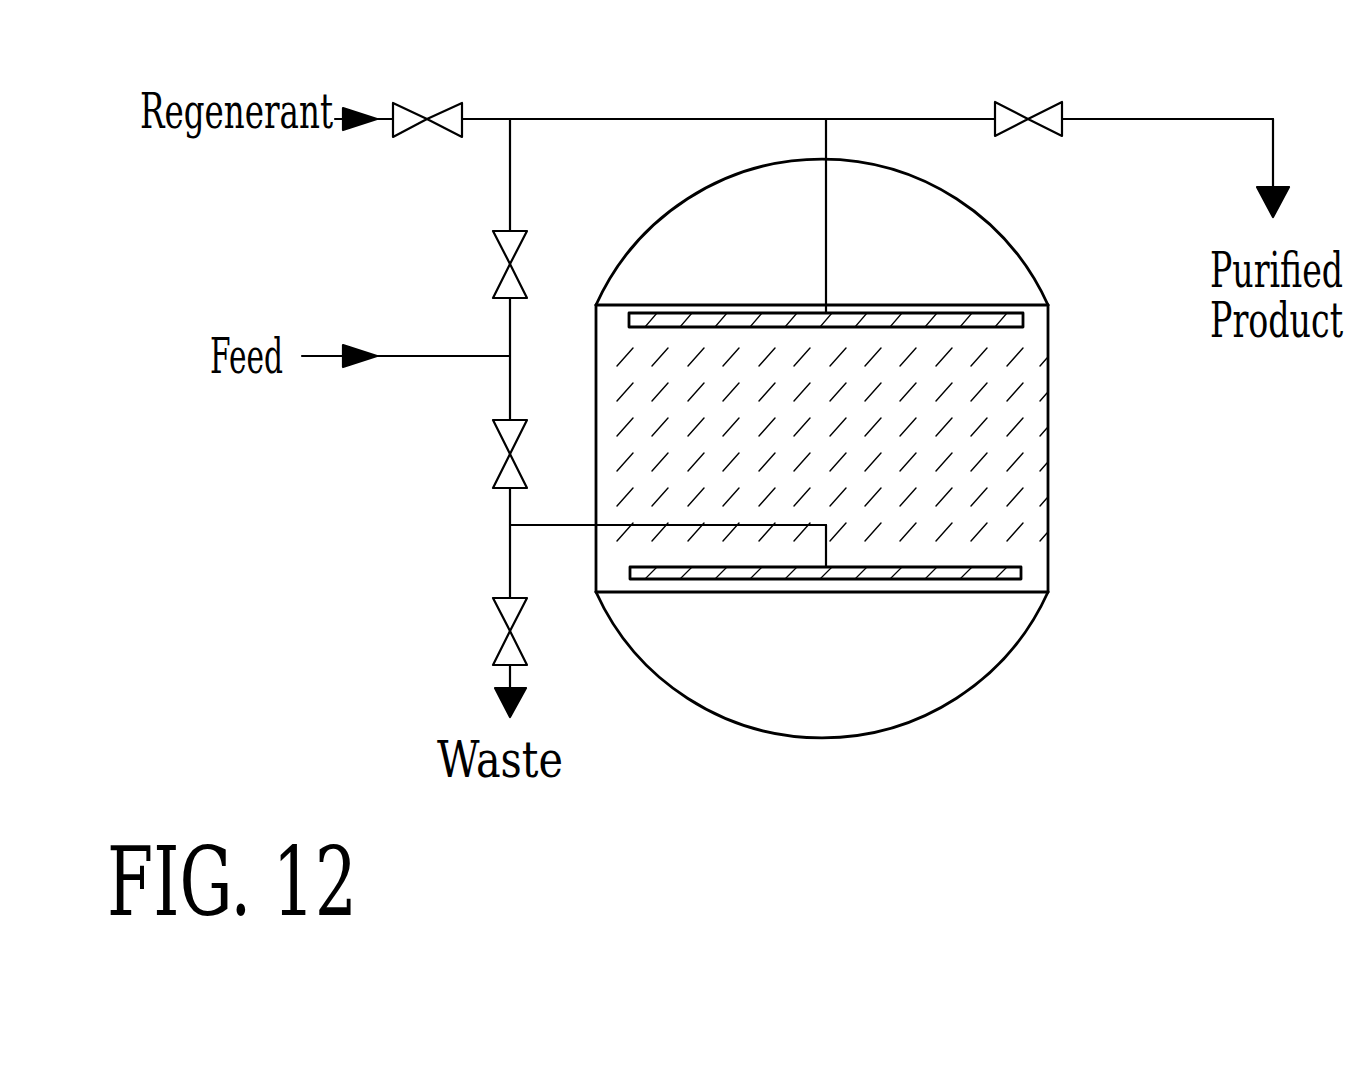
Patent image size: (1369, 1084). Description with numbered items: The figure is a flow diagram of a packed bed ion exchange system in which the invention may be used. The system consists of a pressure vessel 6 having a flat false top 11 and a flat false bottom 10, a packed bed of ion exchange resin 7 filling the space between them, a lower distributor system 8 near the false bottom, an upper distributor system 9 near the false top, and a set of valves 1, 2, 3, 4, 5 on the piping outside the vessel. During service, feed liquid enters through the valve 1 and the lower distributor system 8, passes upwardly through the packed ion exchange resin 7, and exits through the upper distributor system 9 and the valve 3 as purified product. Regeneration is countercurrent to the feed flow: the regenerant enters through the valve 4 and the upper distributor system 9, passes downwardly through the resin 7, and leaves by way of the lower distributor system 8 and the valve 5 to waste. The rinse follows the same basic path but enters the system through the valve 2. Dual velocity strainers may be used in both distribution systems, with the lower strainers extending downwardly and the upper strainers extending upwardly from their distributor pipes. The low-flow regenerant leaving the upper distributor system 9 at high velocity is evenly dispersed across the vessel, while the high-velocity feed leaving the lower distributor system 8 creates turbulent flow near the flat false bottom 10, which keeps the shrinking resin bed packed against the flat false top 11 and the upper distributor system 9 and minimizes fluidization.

The valve 1 is at (475, 464).
The valve 2 is at (474, 269).
The valve 3 is at (1028, 149).
The valve 4 is at (427, 92).
The valve 5 is at (475, 637).
The pressure vessel 6 is at (1048, 304).
The ion exchange resin 7 is at (998, 502).
The lower distributor system 8 is at (898, 580).
The upper distributor system 9 is at (885, 313).
The flat false bottom 10 is at (812, 592).
The flat false top 11 is at (798, 304).